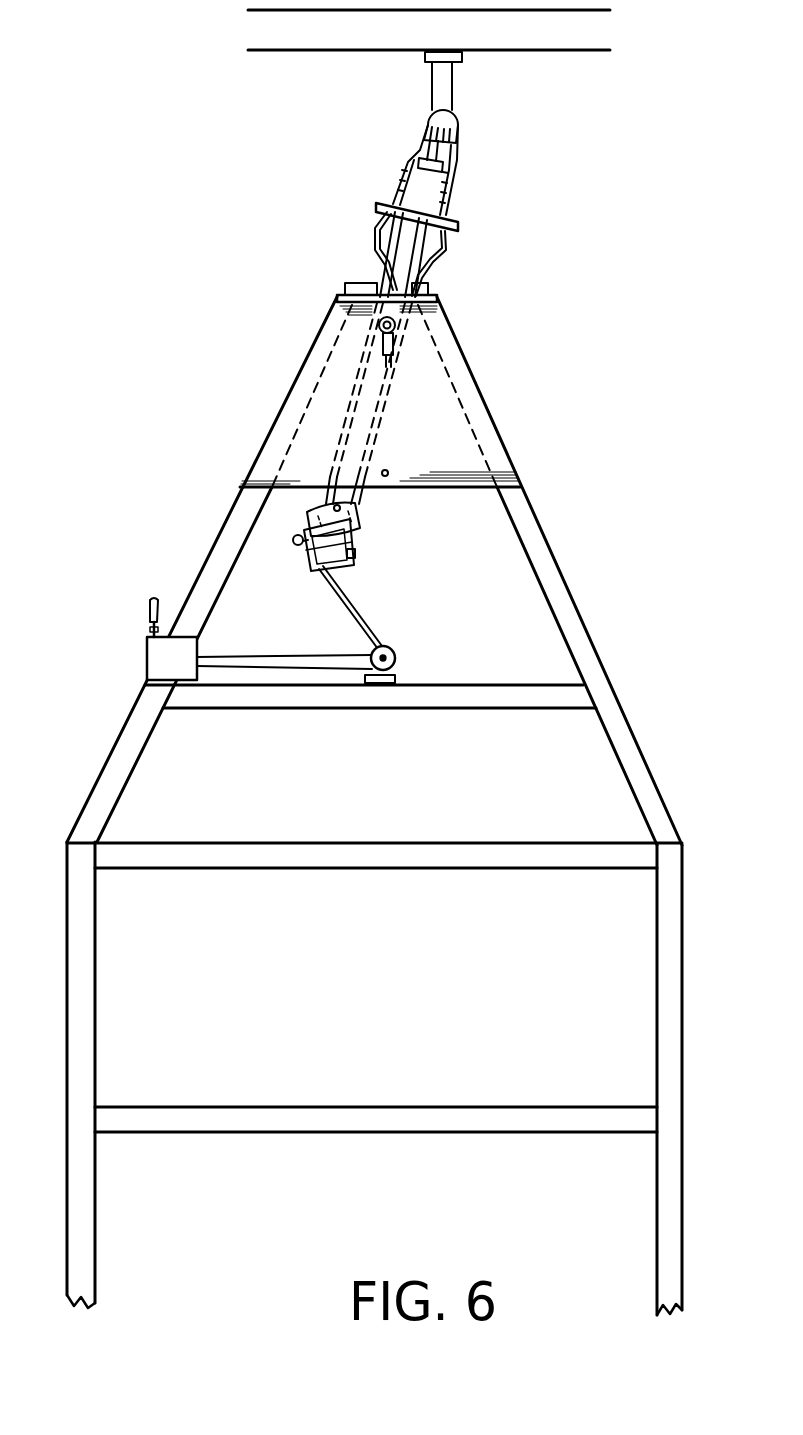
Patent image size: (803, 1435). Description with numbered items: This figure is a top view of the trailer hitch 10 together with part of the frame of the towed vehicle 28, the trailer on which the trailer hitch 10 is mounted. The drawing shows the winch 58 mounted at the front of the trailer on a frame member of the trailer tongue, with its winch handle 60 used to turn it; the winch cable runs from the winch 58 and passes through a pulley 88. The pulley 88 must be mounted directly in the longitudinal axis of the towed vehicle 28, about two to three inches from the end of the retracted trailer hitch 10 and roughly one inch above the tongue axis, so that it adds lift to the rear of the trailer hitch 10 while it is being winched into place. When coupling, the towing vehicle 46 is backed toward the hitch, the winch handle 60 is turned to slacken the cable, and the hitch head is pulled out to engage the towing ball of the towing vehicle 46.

The trailer hitch 10 is at (374, 683).
The towed vehicle 28 is at (536, 411).
The towing vehicle 46 is at (452, 42).
The winch 58 is at (147, 650).
The winch handle 60 is at (148, 601).
The pulley 88 is at (393, 654).